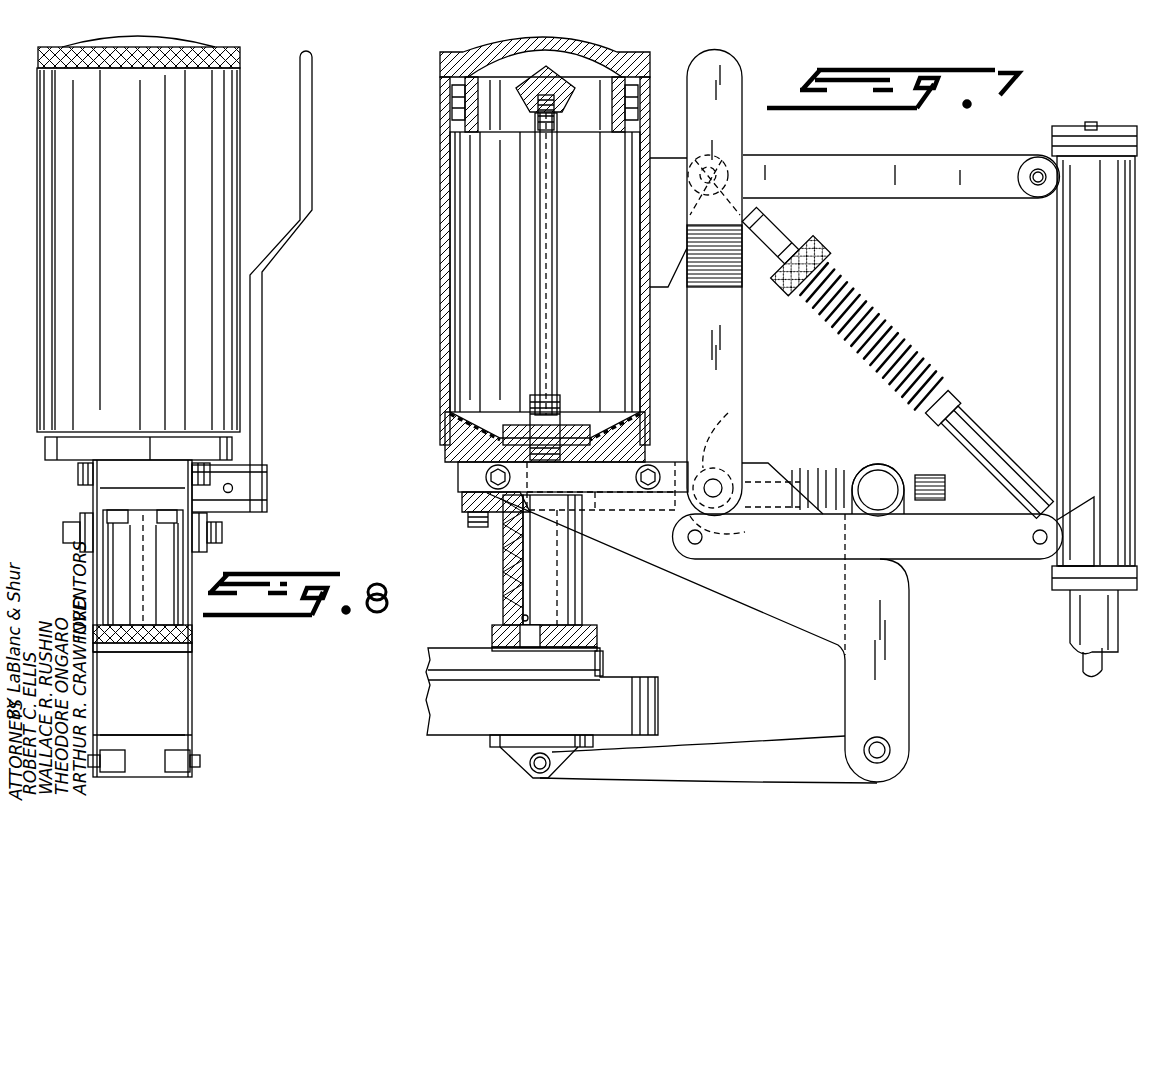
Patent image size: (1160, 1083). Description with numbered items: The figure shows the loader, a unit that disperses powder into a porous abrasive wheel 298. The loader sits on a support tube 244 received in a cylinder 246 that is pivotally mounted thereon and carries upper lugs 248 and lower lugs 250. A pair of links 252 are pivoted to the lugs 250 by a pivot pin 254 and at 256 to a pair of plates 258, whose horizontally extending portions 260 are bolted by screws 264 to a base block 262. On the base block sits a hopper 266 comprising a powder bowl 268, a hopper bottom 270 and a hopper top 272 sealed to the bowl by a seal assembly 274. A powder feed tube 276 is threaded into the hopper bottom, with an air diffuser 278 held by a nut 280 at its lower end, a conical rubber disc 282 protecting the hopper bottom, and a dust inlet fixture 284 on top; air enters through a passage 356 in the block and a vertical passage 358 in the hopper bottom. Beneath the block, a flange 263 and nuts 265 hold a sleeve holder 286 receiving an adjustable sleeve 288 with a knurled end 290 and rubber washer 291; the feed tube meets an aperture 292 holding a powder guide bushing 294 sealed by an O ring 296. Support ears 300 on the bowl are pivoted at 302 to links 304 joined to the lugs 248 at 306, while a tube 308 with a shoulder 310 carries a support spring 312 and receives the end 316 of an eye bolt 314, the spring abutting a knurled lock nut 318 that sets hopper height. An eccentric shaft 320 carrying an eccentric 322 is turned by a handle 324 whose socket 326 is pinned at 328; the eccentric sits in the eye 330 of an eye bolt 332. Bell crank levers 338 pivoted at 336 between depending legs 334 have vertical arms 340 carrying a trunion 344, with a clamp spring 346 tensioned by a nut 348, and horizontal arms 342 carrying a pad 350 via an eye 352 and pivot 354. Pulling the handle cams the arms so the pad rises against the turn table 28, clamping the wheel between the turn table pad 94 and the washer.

In FIG. 7, the turn table 28 is at (433, 698).
In FIG. 7, the turn table pad 94 is at (559, 694).
In FIG. 7, the support tube 244 is at (1072, 612).
In FIG. 7, the cylinder 246 is at (1060, 275).
In FIG. 7, the upper lugs 248 is at (1058, 200).
In FIG. 7, the lower lugs 250 is at (1065, 490).
In FIG. 8, the links 252 is at (88, 512).
In FIG. 7, the links 252 is at (965, 555).
In FIG. 7, the pivot pin 254 is at (1035, 548).
In FIG. 8, the pivot 256 is at (224, 530).
In FIG. 7, the pivot 256 is at (690, 545).
In FIG. 8, the plates 258 is at (187, 587).
In FIG. 7, the plates 258 is at (768, 612).
In FIG. 7, the horizontally extending portions 260 is at (630, 540).
In FIG. 8, the base block 262 is at (152, 487).
In FIG. 7, the base block 262 is at (458, 468).
In FIG. 7, the flange 263 is at (470, 500).
In FIG. 8, the screws 264 is at (78, 475).
In FIG. 7, the screws 264 is at (487, 478).
In FIG. 7, the nuts 265 is at (475, 525).
In FIG. 7, the hopper 266 is at (430, 276).
In FIG. 8, the powder bowl 268 is at (237, 165).
In FIG. 7, the powder bowl 268 is at (437, 330).
In FIG. 8, the hopper bottom 270 is at (90, 447).
In FIG. 8, the hopper top 272 is at (243, 52).
In FIG. 7, the hopper top 272 is at (452, 57).
In FIG. 7, the seal assembly 274 is at (452, 110).
In FIG. 7, the powder feed tube 276 is at (550, 298).
In FIG. 7, the air diffuser 278 is at (513, 425).
In FIG. 7, the nut 280 is at (556, 420).
In FIG. 7, the conical rubber disc 282 is at (458, 415).
In FIG. 7, the dust inlet fixture 284 is at (560, 105).
In FIG. 8, the sleeve holder 286 is at (150, 556).
In FIG. 7, the sleeve holder 286 is at (582, 608).
In FIG. 7, the adjustable sleeve 288 is at (503, 598).
In FIG. 8, the knurled end 290 is at (195, 633).
In FIG. 7, the knurled end 290 is at (492, 636).
In FIG. 8, the rubber washer 291 is at (170, 647).
In FIG. 7, the rubber washer 291 is at (600, 648).
In FIG. 7, the aperture 292 is at (601, 543).
In FIG. 7, the powder guide bushing 294 is at (515, 525).
In FIG. 7, the O ring 296 is at (512, 632).
In FIG. 7, the abrasive wheel 298 is at (603, 662).
In FIG. 7, the support ears 300 is at (667, 167).
In FIG. 7, the pivot 302 is at (720, 175).
In FIG. 7, the links 304 is at (920, 160).
In FIG. 7, the pivot 306 is at (1035, 170).
In FIG. 7, the tube 308 is at (965, 430).
In FIG. 7, the shoulder 310 is at (940, 385).
In FIG. 7, the support spring 312 is at (880, 335).
In FIG. 7, the eye bolt 314 is at (770, 208).
In FIG. 7, the end 316 is at (815, 315).
In FIG. 7, the knurled lock nut 318 is at (820, 228).
In FIG. 7, the eccentric shaft 320 is at (735, 485).
In FIG. 7, the eccentric 322 is at (745, 513).
In FIG. 8, the handle 324 is at (258, 360).
In FIG. 7, the handle 324 is at (727, 75).
In FIG. 8, the socket 326 is at (250, 500).
In FIG. 8, the pin 328 is at (233, 488).
In FIG. 7, the eye 330 is at (720, 440).
In FIG. 7, the eye bolt 332 is at (820, 470).
In FIG. 7, the depending legs 334 is at (855, 683).
In FIG. 7, the pivot 336 is at (885, 752).
In FIG. 7, the bell crank levers 338 is at (905, 640).
In FIG. 7, the upper vertical arms 340 is at (880, 462).
In FIG. 8, the lower horizontally extending arms 342 is at (172, 778).
In FIG. 7, the lower horizontally extending arms 342 is at (742, 726).
In FIG. 7, the trunion 344 is at (876, 520).
In FIG. 7, the clamp spring 346 is at (803, 476).
In FIG. 7, the nut 348 is at (922, 476).
In FIG. 7, the pad 350 is at (495, 748).
In FIG. 7, the eye 352 is at (525, 762).
In FIG. 7, the pivot 354 is at (542, 773).
In FIG. 7, the passage 356 is at (645, 437).
In FIG. 7, the vertical passage 358 is at (575, 428).